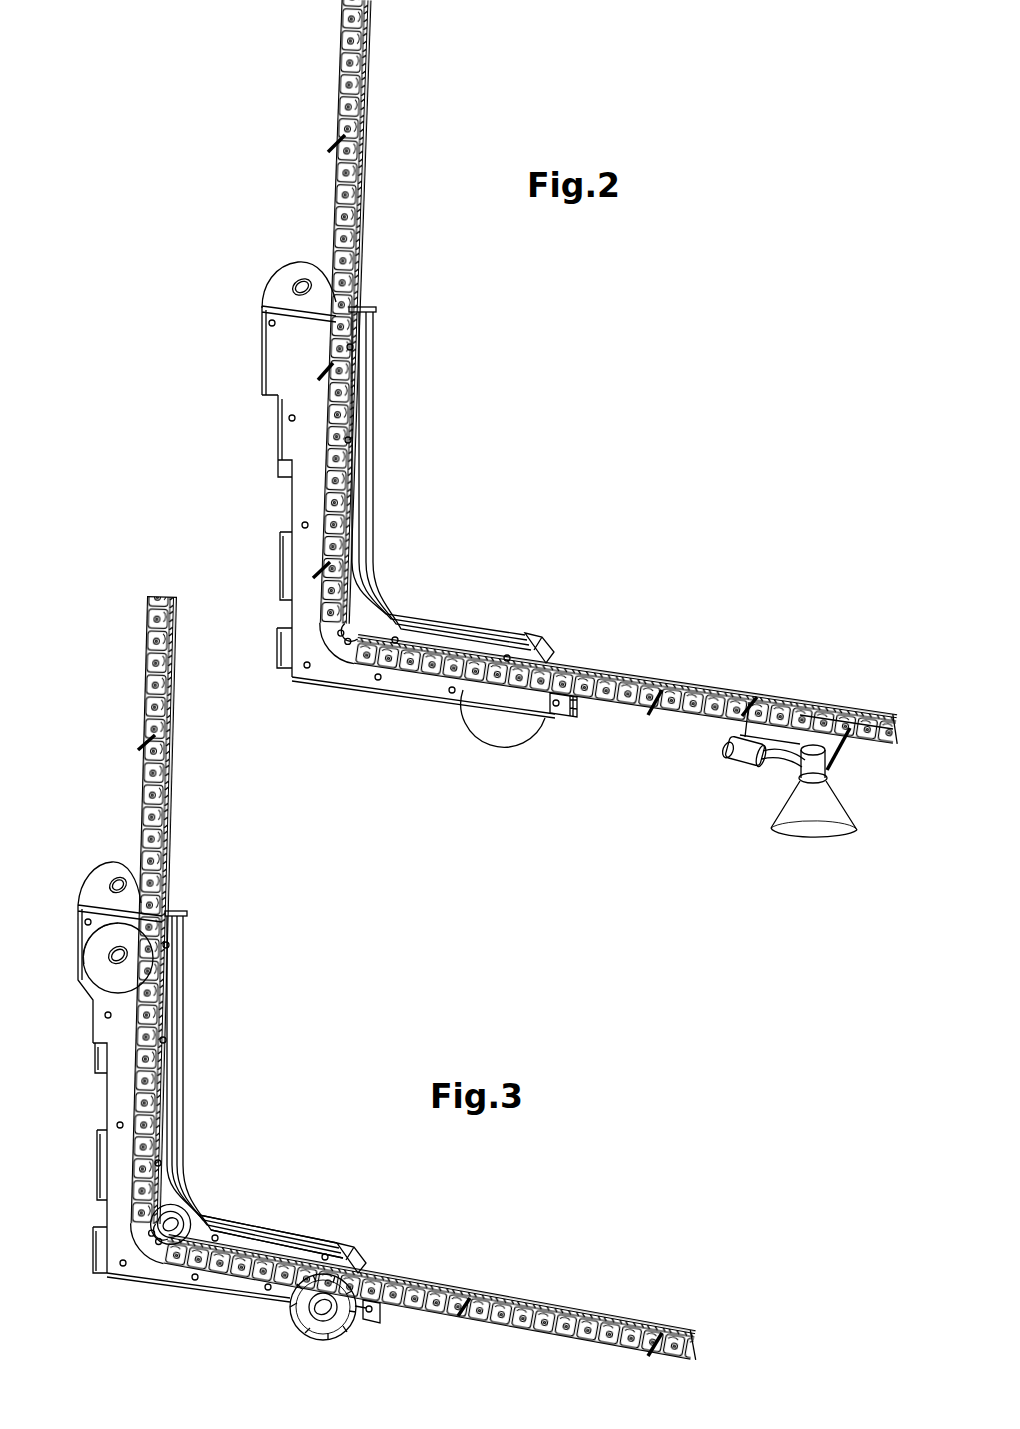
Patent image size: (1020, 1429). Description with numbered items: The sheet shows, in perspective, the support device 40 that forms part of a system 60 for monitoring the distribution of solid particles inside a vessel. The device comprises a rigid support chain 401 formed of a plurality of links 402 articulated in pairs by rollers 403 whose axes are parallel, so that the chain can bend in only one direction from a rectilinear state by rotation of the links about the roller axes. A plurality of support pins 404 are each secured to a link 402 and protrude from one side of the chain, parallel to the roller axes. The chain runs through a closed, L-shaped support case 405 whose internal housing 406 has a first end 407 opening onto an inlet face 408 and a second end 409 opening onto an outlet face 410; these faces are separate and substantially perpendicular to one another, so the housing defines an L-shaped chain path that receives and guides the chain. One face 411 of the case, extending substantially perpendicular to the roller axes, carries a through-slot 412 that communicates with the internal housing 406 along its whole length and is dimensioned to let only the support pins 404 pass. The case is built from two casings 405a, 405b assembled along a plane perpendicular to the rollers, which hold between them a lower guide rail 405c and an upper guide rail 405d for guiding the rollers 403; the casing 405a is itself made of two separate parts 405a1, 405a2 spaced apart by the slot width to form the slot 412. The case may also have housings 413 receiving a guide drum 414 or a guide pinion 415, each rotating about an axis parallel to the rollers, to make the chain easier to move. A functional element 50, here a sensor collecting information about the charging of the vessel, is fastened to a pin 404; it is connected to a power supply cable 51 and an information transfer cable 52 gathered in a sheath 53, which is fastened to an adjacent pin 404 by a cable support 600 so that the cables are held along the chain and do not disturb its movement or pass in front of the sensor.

In FIG. 2, the support device 40 is at (398, 536).
In FIG. 2, the functional element 50 is at (842, 823).
In FIG. 2, the power supply cable 51 is at (783, 785).
In FIG. 2, the information transfer cable 52 is at (773, 765).
In FIG. 2, the sheath 53 is at (755, 755).
In FIG. 2, the system for monitoring the distribution of solid particles 60 is at (705, 465).
In FIG. 2, the support chain 401 is at (392, 103).
In FIG. 3, the support chain 401 is at (614, 1296).
In FIG. 2, the link 402 is at (870, 712).
In FIG. 2, the roller 403 is at (766, 718).
In FIG. 2, the support pin 404 is at (330, 150).
In FIG. 3, the support pin 404 is at (140, 745).
In FIG. 2, the support case 405 is at (318, 700).
In FIG. 2, the casing 405a is at (153, 512).
In FIG. 2, the first casing part 405a1 is at (300, 516).
In FIG. 2, the second casing part 405a2 is at (320, 496).
In FIG. 2, the casing 405b is at (438, 628).
In FIG. 3, the casing 405b is at (182, 918).
In FIG. 3, the lower guide rail 405c is at (168, 1268).
In FIG. 3, the upper guide rail 405d is at (268, 1246).
In FIG. 2, the internal housing 406 is at (470, 685).
In FIG. 2, the first end 407 is at (364, 337).
In FIG. 2, the inlet face 408 is at (372, 296).
In FIG. 2, the second end 409 is at (585, 712).
In FIG. 2, the outlet face 410 is at (570, 717).
In FIG. 2, the face 411 is at (292, 396).
In FIG. 2, the through-slot 412 is at (368, 655).
In FIG. 3, the housing 413 is at (95, 937).
In FIG. 3, the guide drum 414 is at (185, 1185).
In FIG. 3, the guide pinion 415 is at (375, 1320).
In FIG. 2, the cable support 600 is at (738, 752).